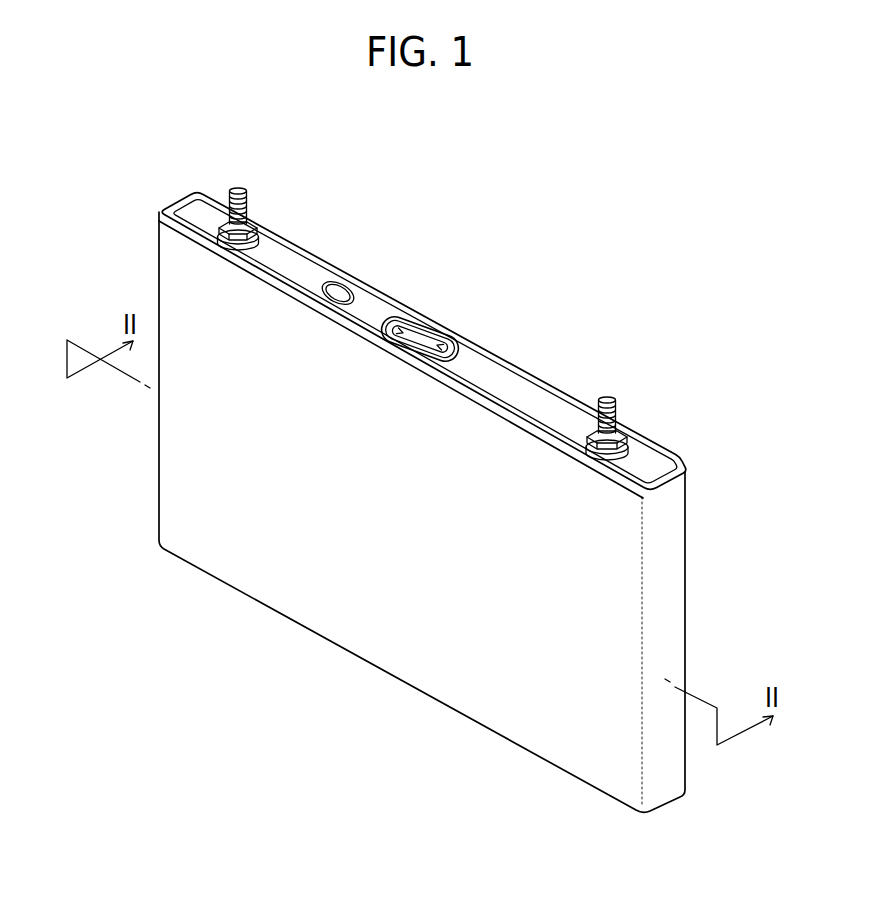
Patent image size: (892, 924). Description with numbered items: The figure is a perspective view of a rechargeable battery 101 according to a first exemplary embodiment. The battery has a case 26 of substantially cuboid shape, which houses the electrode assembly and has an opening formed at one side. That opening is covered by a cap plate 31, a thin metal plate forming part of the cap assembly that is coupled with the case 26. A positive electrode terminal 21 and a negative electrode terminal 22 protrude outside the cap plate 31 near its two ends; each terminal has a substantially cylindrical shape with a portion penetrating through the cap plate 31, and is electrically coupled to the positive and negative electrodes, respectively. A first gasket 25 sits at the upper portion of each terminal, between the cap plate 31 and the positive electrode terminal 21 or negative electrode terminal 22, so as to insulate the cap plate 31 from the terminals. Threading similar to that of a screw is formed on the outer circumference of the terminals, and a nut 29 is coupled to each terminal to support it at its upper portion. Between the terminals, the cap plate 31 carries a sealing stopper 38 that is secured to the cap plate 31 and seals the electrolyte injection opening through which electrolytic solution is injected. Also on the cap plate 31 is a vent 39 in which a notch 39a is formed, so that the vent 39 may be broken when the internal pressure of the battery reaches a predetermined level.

The rechargeable battery 101 is at (423, 474).
The positive electrode terminal 21 is at (240, 191).
The negative electrode terminal 22 is at (606, 400).
The first gasket 25 is at (626, 449).
The case 26 is at (372, 647).
The nut 29 is at (614, 433).
The cap plate 31 is at (388, 296).
The sealing stopper 38 is at (338, 287).
The vent 39 is at (455, 301).
The notch 39a is at (433, 338).